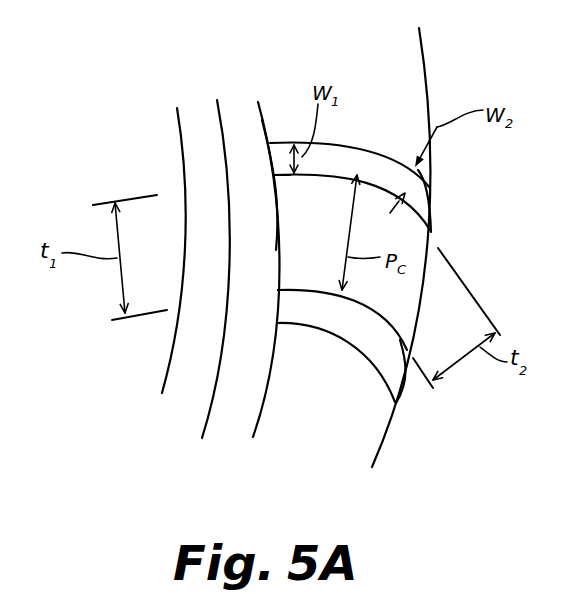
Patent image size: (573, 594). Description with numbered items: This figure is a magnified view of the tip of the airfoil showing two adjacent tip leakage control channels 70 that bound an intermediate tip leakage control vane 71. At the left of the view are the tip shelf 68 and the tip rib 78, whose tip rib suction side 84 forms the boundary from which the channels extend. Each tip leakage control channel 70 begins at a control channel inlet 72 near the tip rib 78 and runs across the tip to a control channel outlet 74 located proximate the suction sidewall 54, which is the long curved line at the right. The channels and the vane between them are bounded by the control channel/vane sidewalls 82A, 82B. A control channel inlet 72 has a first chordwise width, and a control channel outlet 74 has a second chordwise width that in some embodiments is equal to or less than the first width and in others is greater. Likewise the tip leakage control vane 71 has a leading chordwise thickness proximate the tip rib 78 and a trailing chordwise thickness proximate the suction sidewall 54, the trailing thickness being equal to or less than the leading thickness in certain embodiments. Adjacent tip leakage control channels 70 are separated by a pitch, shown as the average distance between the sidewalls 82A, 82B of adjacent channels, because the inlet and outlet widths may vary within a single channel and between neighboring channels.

The suction sidewall 54 is at (406, 416).
The tip shelf 68 is at (191, 100).
The tip leakage control channel 70 is at (380, 132).
The tip leakage control vane 71 is at (263, 222).
The control channel inlet 72 is at (290, 305).
The control channel outlet 74 is at (432, 205).
The tip rib 78 is at (240, 92).
The control channel/vane sidewall 82A is at (315, 287).
The control channel/vane sidewall 82B is at (318, 177).
The tip rib suction side 84 is at (262, 120).